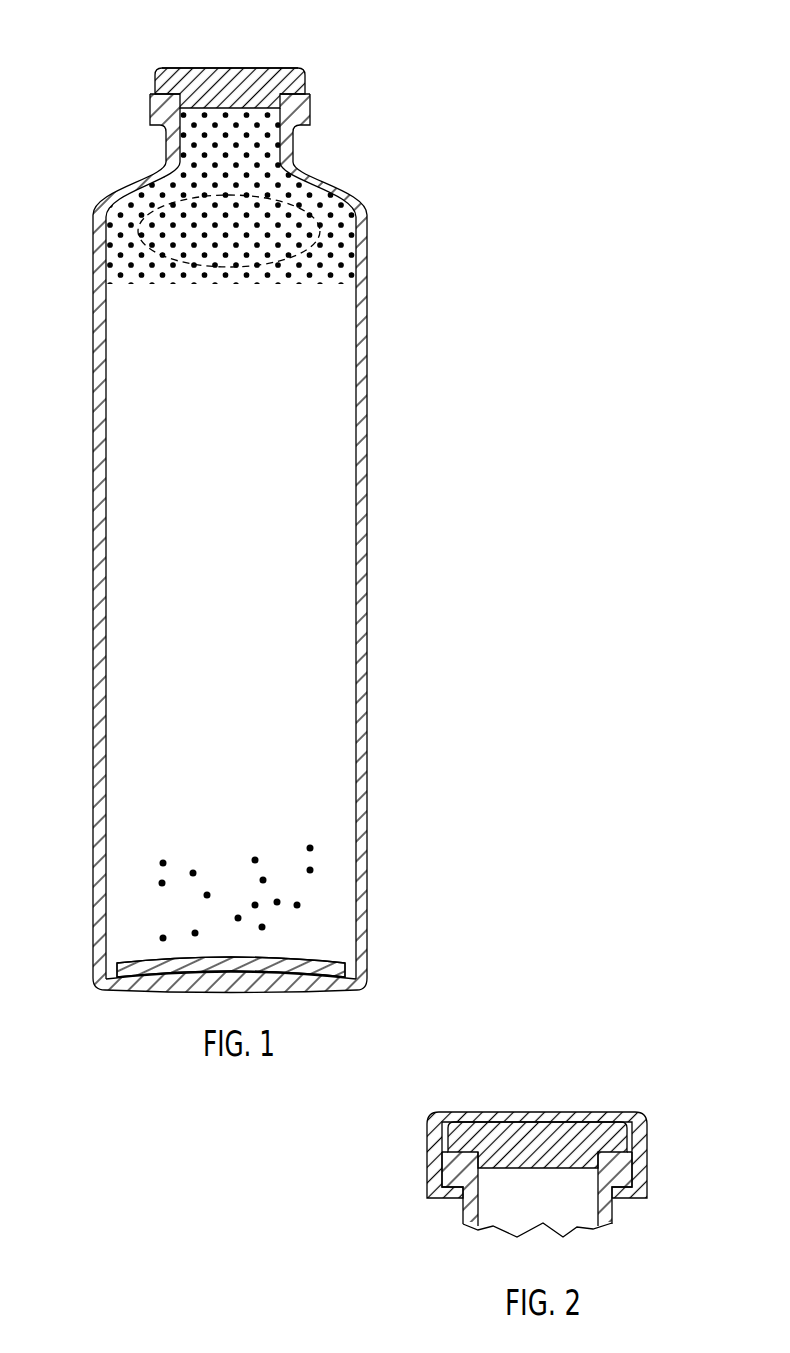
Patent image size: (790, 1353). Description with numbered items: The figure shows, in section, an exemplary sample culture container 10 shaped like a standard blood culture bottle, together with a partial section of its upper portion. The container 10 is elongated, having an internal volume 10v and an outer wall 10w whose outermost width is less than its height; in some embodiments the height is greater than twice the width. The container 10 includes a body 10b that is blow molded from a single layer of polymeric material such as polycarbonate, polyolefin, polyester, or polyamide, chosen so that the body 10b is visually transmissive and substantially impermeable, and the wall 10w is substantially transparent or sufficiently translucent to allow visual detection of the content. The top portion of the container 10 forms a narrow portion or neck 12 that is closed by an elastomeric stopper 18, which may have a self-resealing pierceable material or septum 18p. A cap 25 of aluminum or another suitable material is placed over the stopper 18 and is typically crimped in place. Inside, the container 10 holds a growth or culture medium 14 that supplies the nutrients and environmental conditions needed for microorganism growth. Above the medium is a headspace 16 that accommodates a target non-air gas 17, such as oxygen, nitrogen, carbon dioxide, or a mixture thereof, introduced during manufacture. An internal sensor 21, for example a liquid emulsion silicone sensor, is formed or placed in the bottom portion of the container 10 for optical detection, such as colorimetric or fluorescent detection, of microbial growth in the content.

In FIG. 1, the culture container 10 is at (271, 496).
In FIG. 2, the culture container 10 is at (517, 1177).
In FIG. 1, the outer wall 10w is at (367, 547).
In FIG. 1, the internal volume 10v is at (243, 532).
In FIG. 1, the container body 10b is at (93, 625).
In FIG. 2, the container body 10b is at (603, 1205).
In FIG. 1, the neck 12 is at (308, 143).
In FIG. 1, the growth or culture medium 14 is at (293, 884).
In FIG. 1, the headspace 16 is at (365, 267).
In FIG. 1, the gas 17 is at (337, 221).
In FIG. 1, the elastomeric stopper 18 is at (307, 80).
In FIG. 2, the elastomeric stopper 18 is at (541, 1132).
In FIG. 1, the septum 18p is at (241, 56).
In FIG. 1, the internal sensor 21 is at (302, 958).
In FIG. 2, the cap 25 is at (647, 1145).